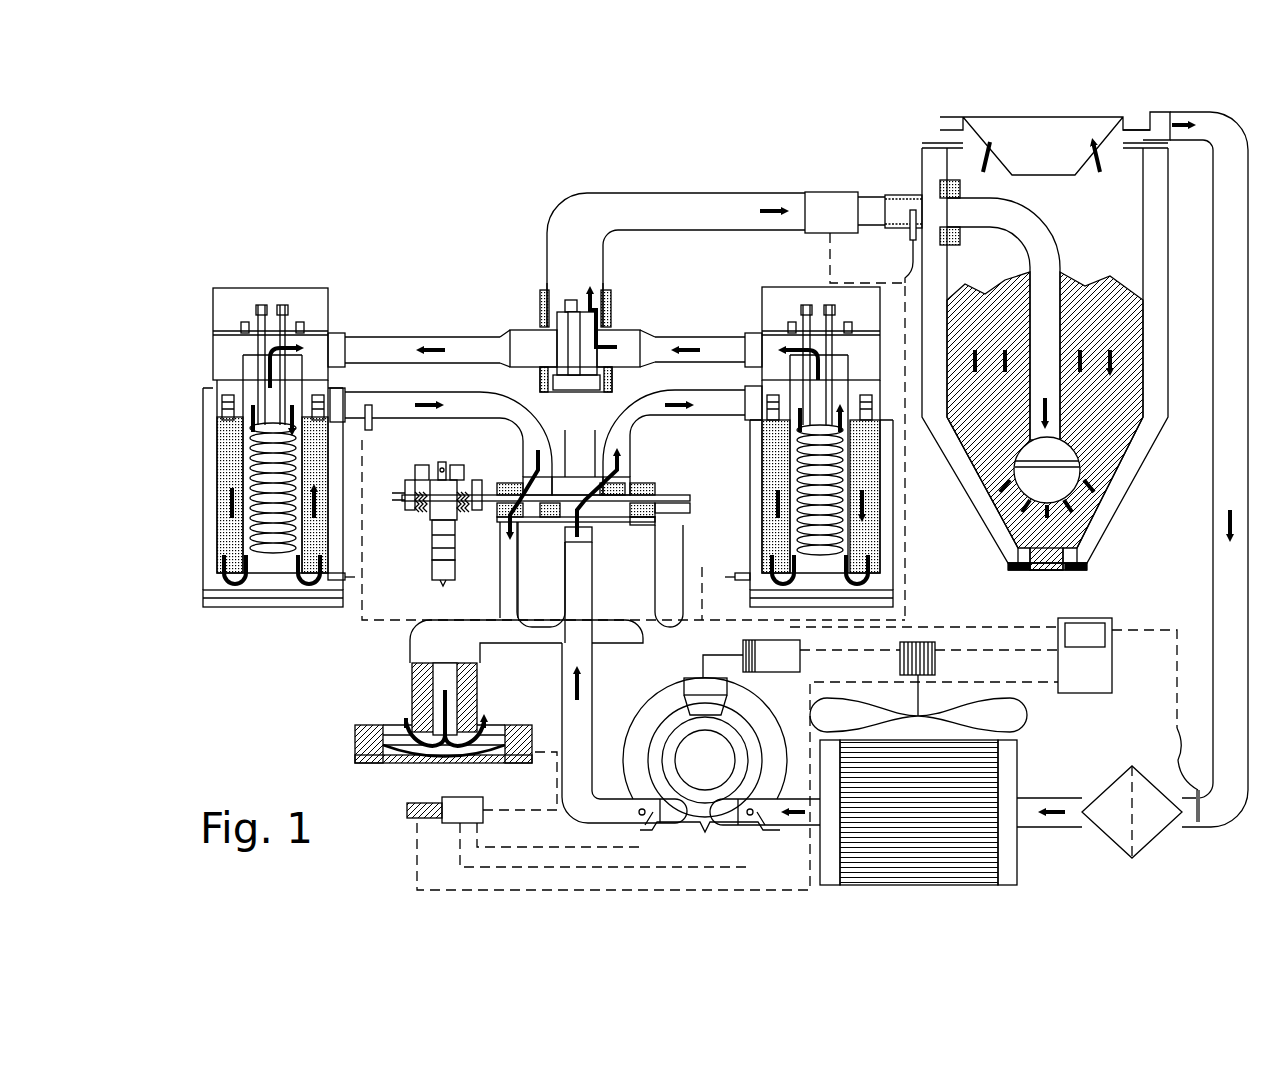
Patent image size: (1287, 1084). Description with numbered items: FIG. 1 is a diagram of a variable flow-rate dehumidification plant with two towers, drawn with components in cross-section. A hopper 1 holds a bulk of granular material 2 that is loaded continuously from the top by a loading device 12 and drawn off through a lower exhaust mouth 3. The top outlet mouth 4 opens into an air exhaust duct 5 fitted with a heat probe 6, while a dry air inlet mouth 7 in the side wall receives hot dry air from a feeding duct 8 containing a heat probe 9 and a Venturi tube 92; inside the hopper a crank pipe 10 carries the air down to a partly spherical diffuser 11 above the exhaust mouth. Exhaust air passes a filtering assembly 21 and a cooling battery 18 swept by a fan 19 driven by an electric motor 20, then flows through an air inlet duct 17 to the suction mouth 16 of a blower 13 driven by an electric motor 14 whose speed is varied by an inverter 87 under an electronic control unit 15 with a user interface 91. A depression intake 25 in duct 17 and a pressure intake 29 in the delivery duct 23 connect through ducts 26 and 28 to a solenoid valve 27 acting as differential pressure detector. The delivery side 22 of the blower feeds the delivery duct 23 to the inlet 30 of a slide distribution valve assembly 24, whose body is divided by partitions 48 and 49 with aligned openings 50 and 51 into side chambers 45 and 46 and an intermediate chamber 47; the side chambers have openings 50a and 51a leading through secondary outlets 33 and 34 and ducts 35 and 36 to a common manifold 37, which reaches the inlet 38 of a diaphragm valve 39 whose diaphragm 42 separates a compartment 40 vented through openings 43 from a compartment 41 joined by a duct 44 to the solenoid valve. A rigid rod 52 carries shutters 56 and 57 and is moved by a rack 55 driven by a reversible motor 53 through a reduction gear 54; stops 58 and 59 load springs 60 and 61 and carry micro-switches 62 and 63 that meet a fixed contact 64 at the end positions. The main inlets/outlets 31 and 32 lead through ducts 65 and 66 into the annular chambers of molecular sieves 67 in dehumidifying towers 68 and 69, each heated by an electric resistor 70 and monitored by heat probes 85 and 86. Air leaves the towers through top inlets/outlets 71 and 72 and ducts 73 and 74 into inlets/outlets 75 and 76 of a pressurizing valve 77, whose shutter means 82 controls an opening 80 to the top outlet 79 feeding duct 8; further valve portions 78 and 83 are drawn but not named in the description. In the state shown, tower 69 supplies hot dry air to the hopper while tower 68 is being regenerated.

The hopper 1 is at (1170, 333).
The granular material 2 is at (1105, 405).
The lower exhaust mouth 3 is at (1042, 568).
The outlet mouth 4 is at (1170, 120).
The air exhaust duct 5 is at (1213, 395).
The heat probe 6 is at (1196, 795).
The dry air inlet mouth 7 is at (915, 197).
The dry-air feeding duct 8 is at (738, 198).
The heat probe 9 is at (910, 236).
The crank pipe 10 is at (1052, 222).
The diffuser 11 is at (1066, 486).
The loading device 12 is at (1048, 120).
The blower 13 is at (768, 712).
The electric motor 14 is at (690, 722).
The electronic control unit 15 is at (1112, 662).
The suction mouth 16 is at (736, 822).
The air inlet duct 17 is at (780, 799).
The cooling battery 18 is at (1017, 762).
The fan 19 is at (1010, 710).
The electric motor 20 is at (900, 658).
The filtering assembly 21 is at (1122, 776).
The delivery side 22 is at (676, 822).
The delivery duct 23 is at (564, 672).
The slide distribution valve assembly 24 is at (580, 472).
The depression intake 25 is at (752, 815).
The duct 26 is at (460, 847).
The solenoid valve 27 is at (460, 797).
The duct 28 is at (575, 847).
The pressure intake 29 is at (641, 808).
The inlet 30 is at (590, 555).
The main inlet/outlet 31 is at (535, 477).
The main inlet/outlet 32 is at (618, 477).
The first secondary outlet 33 is at (513, 515).
The secondary outlet 34 is at (655, 515).
The duct 35 is at (500, 575).
The duct 36 is at (700, 585).
The common manifold 37 is at (440, 632).
The inlet 38 is at (410, 671).
The diaphragm valve 39 is at (531, 728).
The compartment 40 is at (482, 722).
The compartment 41 is at (490, 758).
The diaphragm 42 is at (400, 756).
The openings 43 is at (400, 712).
The duct 44 is at (555, 790).
The side chamber 45 is at (515, 540).
The side chamber 46 is at (655, 525).
The intermediate chamber 47 is at (585, 515).
The partition 48 is at (563, 455).
The partition 49 is at (590, 455).
The through opening 50 is at (548, 520).
The opening 50a is at (510, 483).
The through opening 51 is at (612, 500).
The opening 51a is at (690, 510).
The rigid rod 52 is at (660, 496).
The reversible electric motor 53 is at (440, 566).
The reduction gear 54 is at (438, 522).
The rack 55 is at (440, 482).
The shutter 56 is at (530, 560).
The shutter 57 is at (638, 485).
The stop 58 is at (407, 486).
The stop 59 is at (480, 480).
The spring 60 is at (418, 500).
The spring 61 is at (462, 500).
The micro-switch 62 is at (420, 465).
The micro-switch 63 is at (456, 465).
The fixed intermediate contact 64 is at (442, 462).
The duct 65 is at (395, 392).
The duct 66 is at (688, 390).
The molecular sieves 67 is at (217, 480).
The dehumidifying tower 68 is at (200, 430).
The dehumidifying tower 69 is at (884, 388).
The electric resistor 70 is at (250, 532).
The air inlet/outlet 71 is at (340, 328).
The air inlet/outlet 72 is at (752, 332).
The duct 73 is at (385, 335).
The duct 74 is at (690, 335).
The inlet/outlet 75 is at (535, 332).
The inlet/outlet 76 is at (618, 322).
The pressurizing valve 77 is at (605, 285).
The valve housing 78 is at (560, 370).
The top outlet 79 is at (545, 252).
The opening 80 is at (556, 314).
The shutter means 82 is at (563, 302).
The spool 83 is at (600, 372).
The heat probe 85 is at (335, 582).
The heat probe 86 is at (372, 420).
The inverter 87 is at (800, 659).
The user interface 91 is at (1095, 623).
The Venturi tube 92 is at (825, 192).